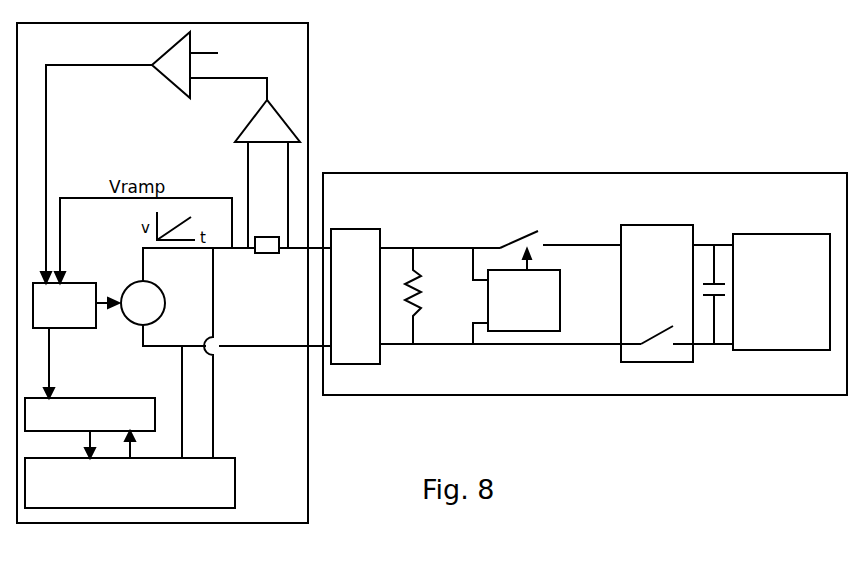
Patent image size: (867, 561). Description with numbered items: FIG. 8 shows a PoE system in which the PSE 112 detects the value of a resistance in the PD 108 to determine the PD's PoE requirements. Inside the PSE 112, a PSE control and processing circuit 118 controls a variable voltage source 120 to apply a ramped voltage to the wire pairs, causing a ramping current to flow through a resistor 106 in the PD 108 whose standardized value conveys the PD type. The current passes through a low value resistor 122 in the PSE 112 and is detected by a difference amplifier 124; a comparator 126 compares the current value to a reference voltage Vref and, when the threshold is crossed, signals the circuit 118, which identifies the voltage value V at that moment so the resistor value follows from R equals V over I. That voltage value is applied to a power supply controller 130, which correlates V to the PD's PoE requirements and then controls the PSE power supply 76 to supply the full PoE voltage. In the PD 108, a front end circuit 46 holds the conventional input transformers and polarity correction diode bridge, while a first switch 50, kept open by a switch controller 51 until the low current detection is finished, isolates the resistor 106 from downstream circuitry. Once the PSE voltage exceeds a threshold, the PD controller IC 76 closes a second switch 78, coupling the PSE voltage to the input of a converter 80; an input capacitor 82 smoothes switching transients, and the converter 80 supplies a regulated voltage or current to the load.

The front end circuit 46 is at (355, 229).
The first switch 50 is at (521, 222).
The switch controller 51 is at (516, 296).
The PSE power supply / PD controller IC 76 is at (163, 508).
The second switch 78 is at (652, 348).
The converter 80 is at (807, 233).
The input capacitor 82 is at (727, 272).
The resistor 106 is at (428, 296).
The PD 108 is at (585, 284).
The PSE 112 is at (308, 475).
The PSE control and processing circuit 118 is at (76, 305).
The variable voltage source 120 is at (187, 297).
The low value resistor 122 is at (268, 253).
The difference amplifier 124 is at (250, 117).
The comparator 126 is at (165, 84).
The power supply controller 130 is at (90, 398).